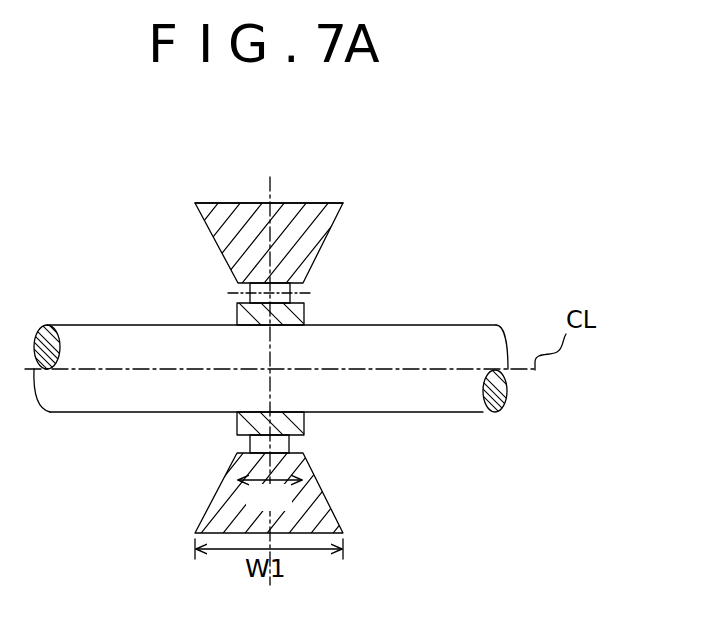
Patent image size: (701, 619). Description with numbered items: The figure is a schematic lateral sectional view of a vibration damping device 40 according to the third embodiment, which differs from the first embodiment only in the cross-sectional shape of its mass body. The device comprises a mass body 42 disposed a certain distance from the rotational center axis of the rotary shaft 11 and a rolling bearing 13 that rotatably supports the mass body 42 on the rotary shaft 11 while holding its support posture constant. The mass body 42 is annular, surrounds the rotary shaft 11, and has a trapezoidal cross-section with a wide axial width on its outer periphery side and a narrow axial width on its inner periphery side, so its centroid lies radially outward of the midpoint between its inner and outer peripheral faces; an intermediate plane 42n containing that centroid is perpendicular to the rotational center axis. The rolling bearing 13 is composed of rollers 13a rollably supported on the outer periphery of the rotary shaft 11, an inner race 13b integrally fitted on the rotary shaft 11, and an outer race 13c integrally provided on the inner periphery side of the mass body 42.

The vibration damping device 40 is at (430, 224).
The mass body 42 is at (276, 335).
The intermediate plane 42n is at (268, 187).
The rolling bearing 13 is at (252, 367).
The rollers 13a is at (296, 291).
The inner race 13b is at (305, 314).
The outer race 13c is at (303, 453).
The rotary shaft 11 is at (413, 325).